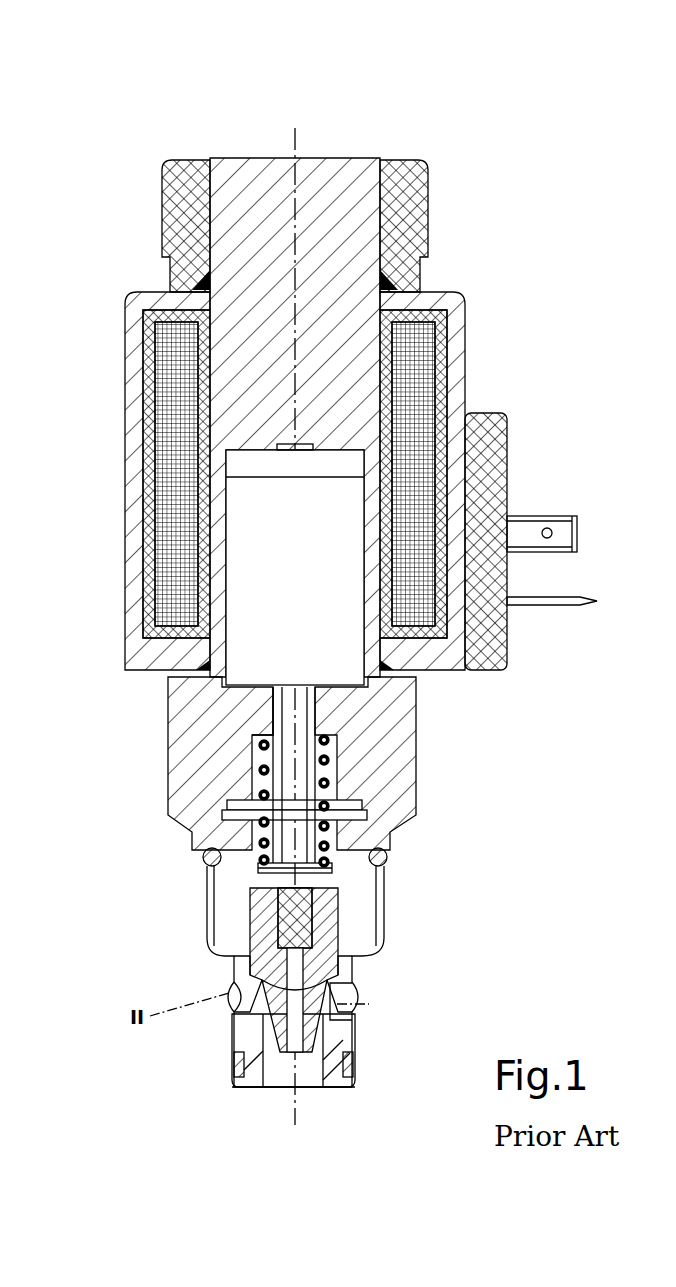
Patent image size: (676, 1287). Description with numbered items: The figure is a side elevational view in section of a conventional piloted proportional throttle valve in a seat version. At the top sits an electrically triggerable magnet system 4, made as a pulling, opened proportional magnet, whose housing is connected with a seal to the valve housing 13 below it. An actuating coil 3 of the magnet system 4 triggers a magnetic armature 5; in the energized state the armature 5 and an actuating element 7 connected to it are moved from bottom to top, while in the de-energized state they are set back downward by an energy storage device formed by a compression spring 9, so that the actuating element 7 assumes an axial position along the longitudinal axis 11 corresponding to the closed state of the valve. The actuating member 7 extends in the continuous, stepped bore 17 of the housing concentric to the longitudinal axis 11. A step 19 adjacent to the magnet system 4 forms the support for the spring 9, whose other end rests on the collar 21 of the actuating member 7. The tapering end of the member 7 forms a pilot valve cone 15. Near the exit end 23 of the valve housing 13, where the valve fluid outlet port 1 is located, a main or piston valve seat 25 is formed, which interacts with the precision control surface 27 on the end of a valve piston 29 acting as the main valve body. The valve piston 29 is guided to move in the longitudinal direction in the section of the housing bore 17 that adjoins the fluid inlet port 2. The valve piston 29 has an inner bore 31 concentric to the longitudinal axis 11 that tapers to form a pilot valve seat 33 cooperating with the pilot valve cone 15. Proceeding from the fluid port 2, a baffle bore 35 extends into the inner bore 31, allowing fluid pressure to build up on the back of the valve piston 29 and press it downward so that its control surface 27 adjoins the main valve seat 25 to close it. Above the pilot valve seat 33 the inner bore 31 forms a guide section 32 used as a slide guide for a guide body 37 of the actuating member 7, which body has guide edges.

The valve fluid outlet port 1 is at (286, 1082).
The fluid inlet port 2 is at (348, 996).
The actuating coil 3 is at (438, 337).
The magnet system 4 is at (112, 302).
The magnetic armature 5 is at (248, 523).
The actuating element 7 is at (290, 769).
The compression spring 9 is at (330, 757).
The longitudinal axis 11 is at (297, 147).
The valve housing 13 is at (185, 798).
The pilot valve cone 15 is at (351, 970).
The bore 17 is at (218, 925).
The step 19 is at (260, 727).
The collar 21 is at (204, 866).
The exit end 23 is at (332, 1091).
The piston valve seat 25 is at (353, 1054).
The precision control surface 27 is at (261, 1043).
The valve piston 29 is at (335, 935).
The inner bore 31 is at (243, 962).
The guide section 32 is at (384, 866).
The pilot valve seat 33 is at (344, 1021).
The baffle bore 35 is at (236, 1000).
The guide body 37 is at (318, 900).